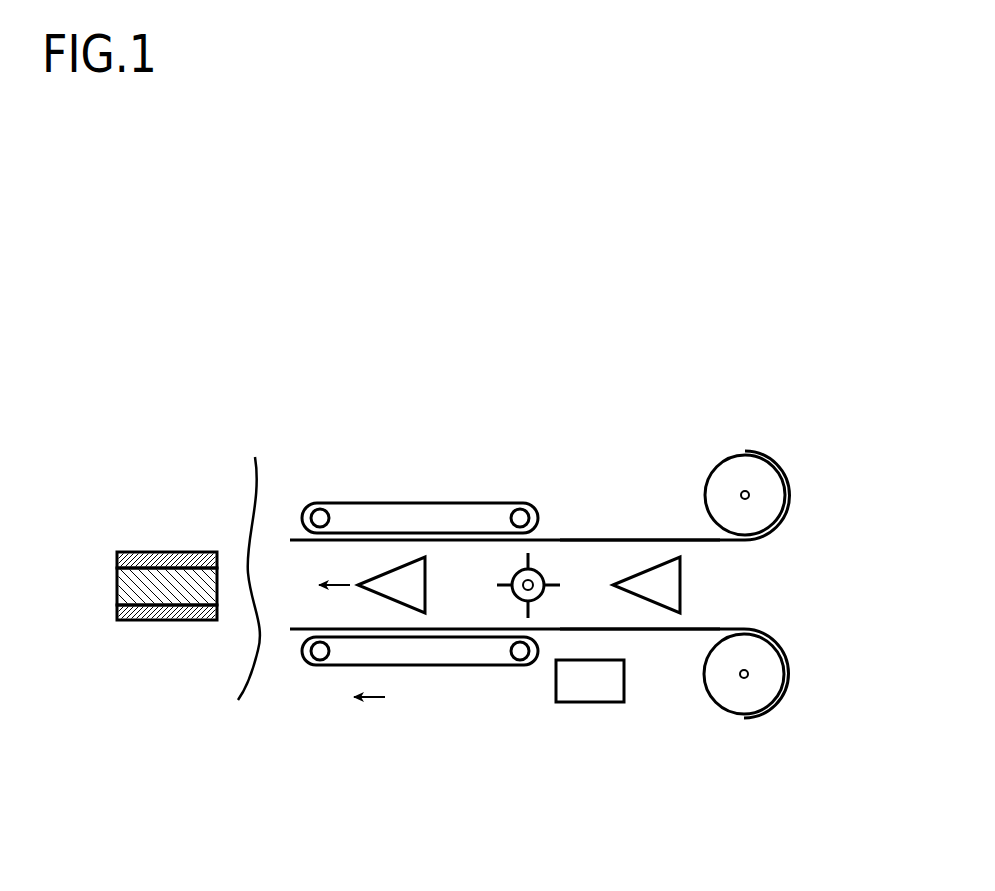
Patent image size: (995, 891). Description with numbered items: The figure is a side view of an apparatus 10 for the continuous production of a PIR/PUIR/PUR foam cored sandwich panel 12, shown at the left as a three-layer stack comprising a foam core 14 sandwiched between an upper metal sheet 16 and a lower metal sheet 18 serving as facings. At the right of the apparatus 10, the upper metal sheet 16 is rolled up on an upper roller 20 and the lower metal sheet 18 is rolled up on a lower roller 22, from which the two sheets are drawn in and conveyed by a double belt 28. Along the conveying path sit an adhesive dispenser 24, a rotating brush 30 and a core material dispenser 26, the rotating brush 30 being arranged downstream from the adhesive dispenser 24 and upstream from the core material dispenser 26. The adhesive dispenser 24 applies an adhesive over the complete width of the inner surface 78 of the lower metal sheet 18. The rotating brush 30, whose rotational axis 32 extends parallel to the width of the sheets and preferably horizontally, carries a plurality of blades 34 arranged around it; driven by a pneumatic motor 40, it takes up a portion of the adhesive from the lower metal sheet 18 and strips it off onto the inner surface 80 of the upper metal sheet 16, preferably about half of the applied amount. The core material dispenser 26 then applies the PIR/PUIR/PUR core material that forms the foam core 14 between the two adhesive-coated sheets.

The apparatus 10 is at (766, 434).
The sandwich panel 12 is at (440, 584).
The foam core 14 is at (117, 591).
The upper metal sheet 16 is at (150, 551).
The lower metal sheet 18 is at (143, 622).
The upper roller 20 is at (713, 472).
The lower roller 22 is at (728, 713).
The adhesive dispenser 24 is at (681, 585).
The core material dispenser 26 is at (425, 578).
The double belt 28 is at (418, 503).
The rotating brush 30 is at (549, 561).
The rotational axis 32 is at (525, 589).
The blades 34 is at (507, 581).
The pneumatic motor 40 is at (586, 705).
The inner surface of the lower metal sheet 78 is at (625, 631).
The inner surface of the upper metal sheet 80 is at (638, 538).